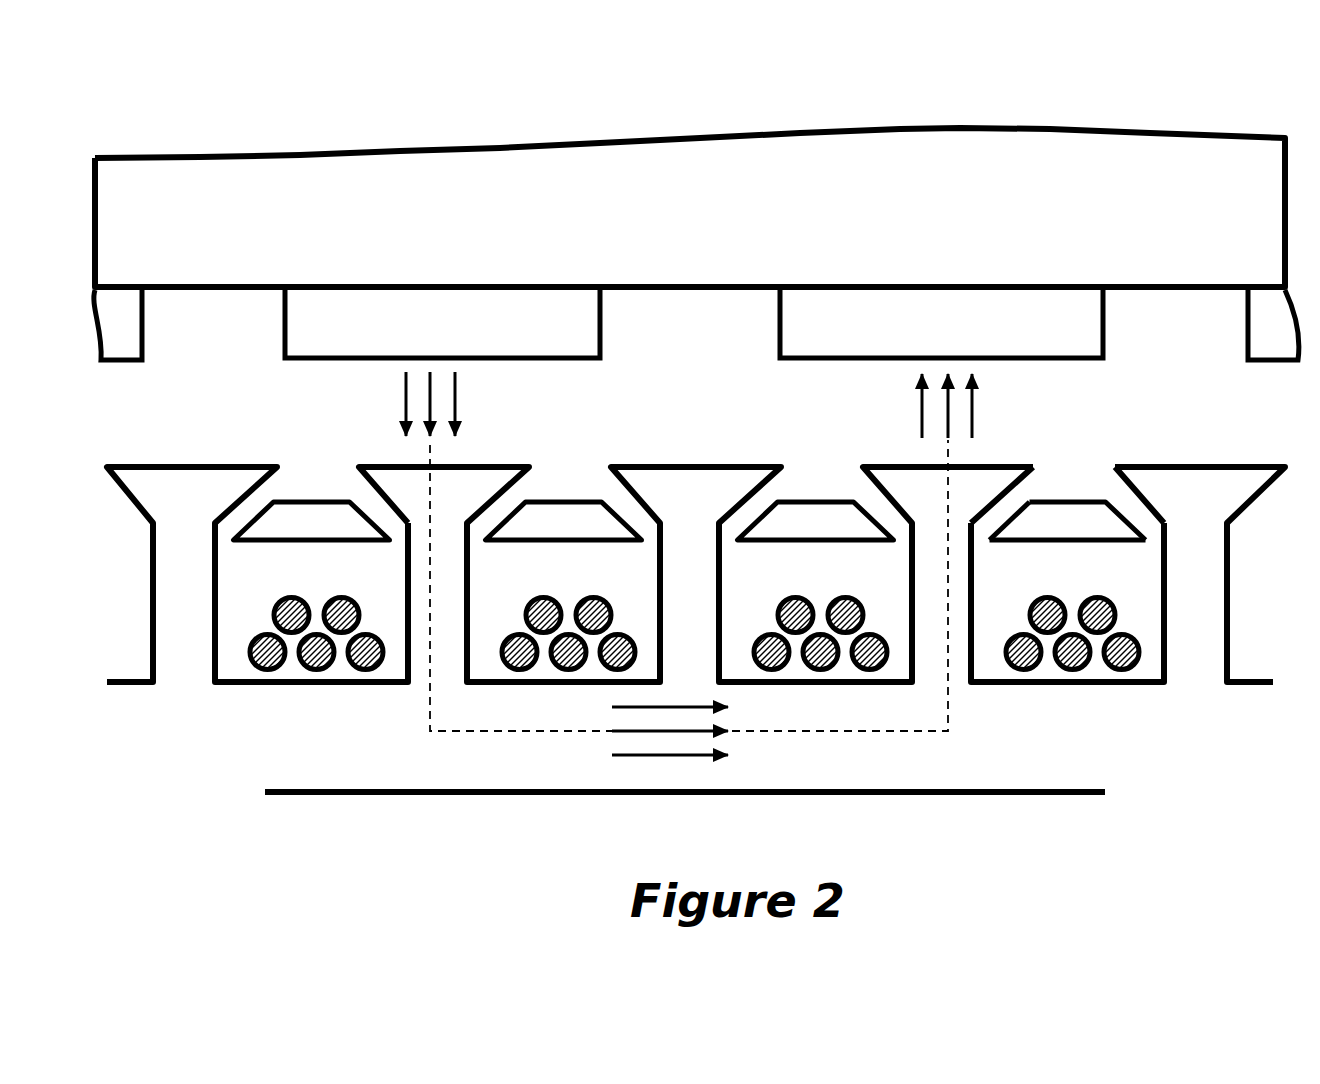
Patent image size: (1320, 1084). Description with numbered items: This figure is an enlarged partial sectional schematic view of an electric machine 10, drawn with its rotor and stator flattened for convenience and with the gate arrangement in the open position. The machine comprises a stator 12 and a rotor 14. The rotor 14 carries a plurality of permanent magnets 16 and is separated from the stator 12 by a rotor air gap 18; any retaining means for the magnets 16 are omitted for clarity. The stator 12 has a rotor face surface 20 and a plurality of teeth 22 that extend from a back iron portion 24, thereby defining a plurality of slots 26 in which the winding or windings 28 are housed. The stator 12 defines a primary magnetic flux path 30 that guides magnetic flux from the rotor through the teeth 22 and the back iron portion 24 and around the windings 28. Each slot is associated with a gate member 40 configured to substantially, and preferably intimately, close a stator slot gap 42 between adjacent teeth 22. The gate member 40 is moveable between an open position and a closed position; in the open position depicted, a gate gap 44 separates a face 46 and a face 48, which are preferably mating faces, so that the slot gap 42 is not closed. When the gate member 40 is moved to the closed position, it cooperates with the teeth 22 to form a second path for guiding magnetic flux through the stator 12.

The electric machine 10 is at (696, 210).
The stator 12 is at (295, 753).
The rotor 14 is at (258, 192).
The permanent magnets 16 is at (378, 308).
The rotor air gap 18 is at (694, 625).
The rotor face surface 20 is at (195, 462).
The teeth 22 is at (190, 530).
The back iron portion 24 is at (295, 717).
The slots 26 is at (282, 687).
The windings 28 is at (255, 668).
The primary magnetic flux path 30 is at (1010, 412).
The gate member 40 is at (1095, 543).
The stator slot gap 42 is at (1087, 468).
The gate gap 44 is at (1015, 500).
The face 46 is at (1012, 533).
The face 48 is at (982, 527).